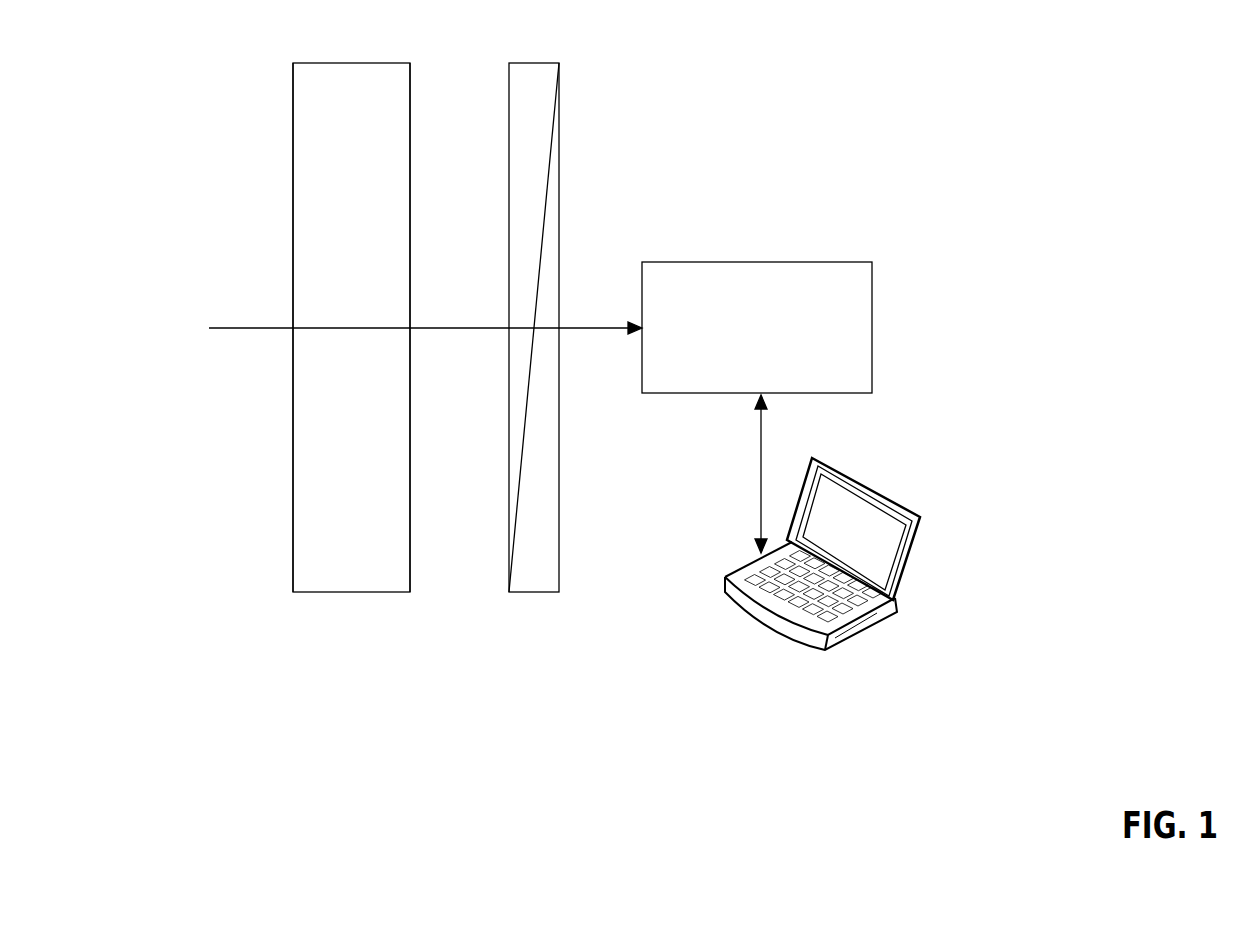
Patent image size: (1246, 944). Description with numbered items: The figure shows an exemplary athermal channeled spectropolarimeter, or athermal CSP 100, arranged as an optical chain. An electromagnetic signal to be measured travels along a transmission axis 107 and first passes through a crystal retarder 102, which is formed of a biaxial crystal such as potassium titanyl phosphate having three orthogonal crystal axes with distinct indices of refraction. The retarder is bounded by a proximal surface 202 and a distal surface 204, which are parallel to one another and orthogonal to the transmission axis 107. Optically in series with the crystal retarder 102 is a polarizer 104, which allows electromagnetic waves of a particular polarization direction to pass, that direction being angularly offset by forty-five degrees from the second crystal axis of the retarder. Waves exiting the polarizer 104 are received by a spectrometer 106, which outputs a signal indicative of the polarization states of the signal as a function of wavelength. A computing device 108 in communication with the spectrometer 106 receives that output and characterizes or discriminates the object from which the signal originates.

The athermal channeled spectropolarimeter 100 is at (1023, 112).
The crystal retarder 102 is at (360, 62).
The polarizer 104 is at (535, 62).
The spectrometer 106 is at (757, 260).
The transmission axis 107 is at (260, 327).
The computing device 108 is at (862, 478).
The proximal surface 202 is at (293, 195).
The distal surface 204 is at (410, 128).